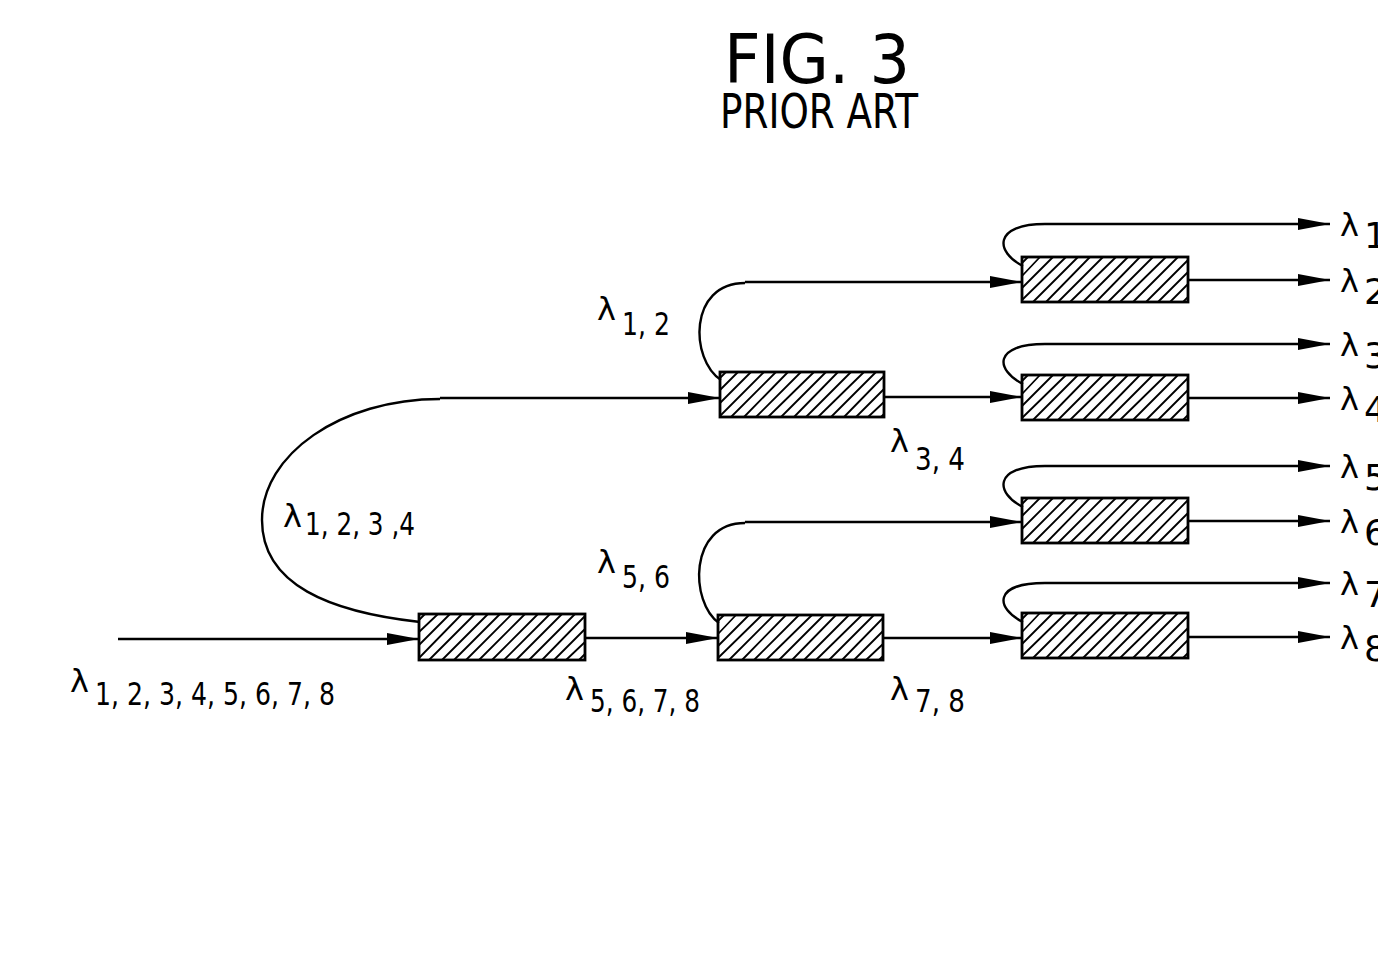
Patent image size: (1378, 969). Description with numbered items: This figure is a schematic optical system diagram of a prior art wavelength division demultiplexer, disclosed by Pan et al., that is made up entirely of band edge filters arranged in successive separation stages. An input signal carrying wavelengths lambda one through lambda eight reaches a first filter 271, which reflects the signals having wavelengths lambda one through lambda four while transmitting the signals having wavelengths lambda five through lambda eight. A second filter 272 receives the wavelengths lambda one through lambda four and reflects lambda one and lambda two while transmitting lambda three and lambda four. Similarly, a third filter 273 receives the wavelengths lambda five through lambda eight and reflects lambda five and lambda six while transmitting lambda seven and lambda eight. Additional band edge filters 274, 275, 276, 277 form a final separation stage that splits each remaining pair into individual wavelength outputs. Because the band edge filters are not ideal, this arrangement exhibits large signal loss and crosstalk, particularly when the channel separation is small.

The first filter 271 is at (444, 660).
The second filter 272 is at (786, 417).
The third filter 273 is at (796, 660).
The band edge filter 274 is at (1189, 300).
The band edge filter 275 is at (1189, 418).
The band edge filter 276 is at (1189, 541).
The band edge filter 277 is at (1189, 656).